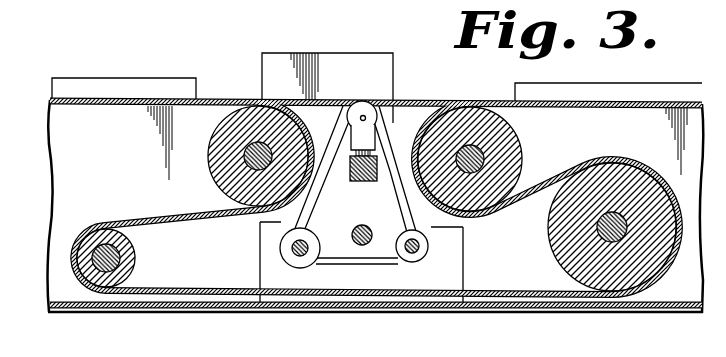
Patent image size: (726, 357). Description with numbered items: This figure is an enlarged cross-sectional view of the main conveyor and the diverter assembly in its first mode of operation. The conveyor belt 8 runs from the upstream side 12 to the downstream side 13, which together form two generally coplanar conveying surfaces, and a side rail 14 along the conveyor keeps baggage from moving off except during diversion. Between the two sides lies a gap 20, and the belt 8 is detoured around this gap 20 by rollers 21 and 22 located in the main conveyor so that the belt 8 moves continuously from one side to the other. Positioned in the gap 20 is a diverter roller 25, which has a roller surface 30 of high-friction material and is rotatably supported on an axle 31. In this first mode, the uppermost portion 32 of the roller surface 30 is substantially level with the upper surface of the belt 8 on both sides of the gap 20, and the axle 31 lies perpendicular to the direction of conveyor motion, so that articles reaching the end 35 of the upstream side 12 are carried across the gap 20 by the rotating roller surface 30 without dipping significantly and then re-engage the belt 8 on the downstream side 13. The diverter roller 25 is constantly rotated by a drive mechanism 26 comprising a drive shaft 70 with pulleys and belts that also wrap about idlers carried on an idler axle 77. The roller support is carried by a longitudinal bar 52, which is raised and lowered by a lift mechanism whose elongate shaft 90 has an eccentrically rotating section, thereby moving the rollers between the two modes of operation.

The belt 8 is at (101, 106).
The upstream side 12 is at (490, 101).
The downstream side 13 is at (207, 100).
The side rail 14 is at (668, 84).
The gap 20 is at (383, 184).
The roller 21 is at (212, 176).
The roller 22 is at (138, 262).
The diverter roller 25 is at (347, 100).
The drive mechanism 26 is at (377, 265).
The roller surface 30 is at (392, 106).
The axle 31 is at (360, 118).
The uppermost portion 32 is at (349, 113).
The end 35 is at (402, 173).
The longitudinal bar 52 is at (375, 182).
The drive shaft 70 is at (292, 248).
The idler axle 77 is at (426, 255).
The elongate shaft 90 is at (353, 230).